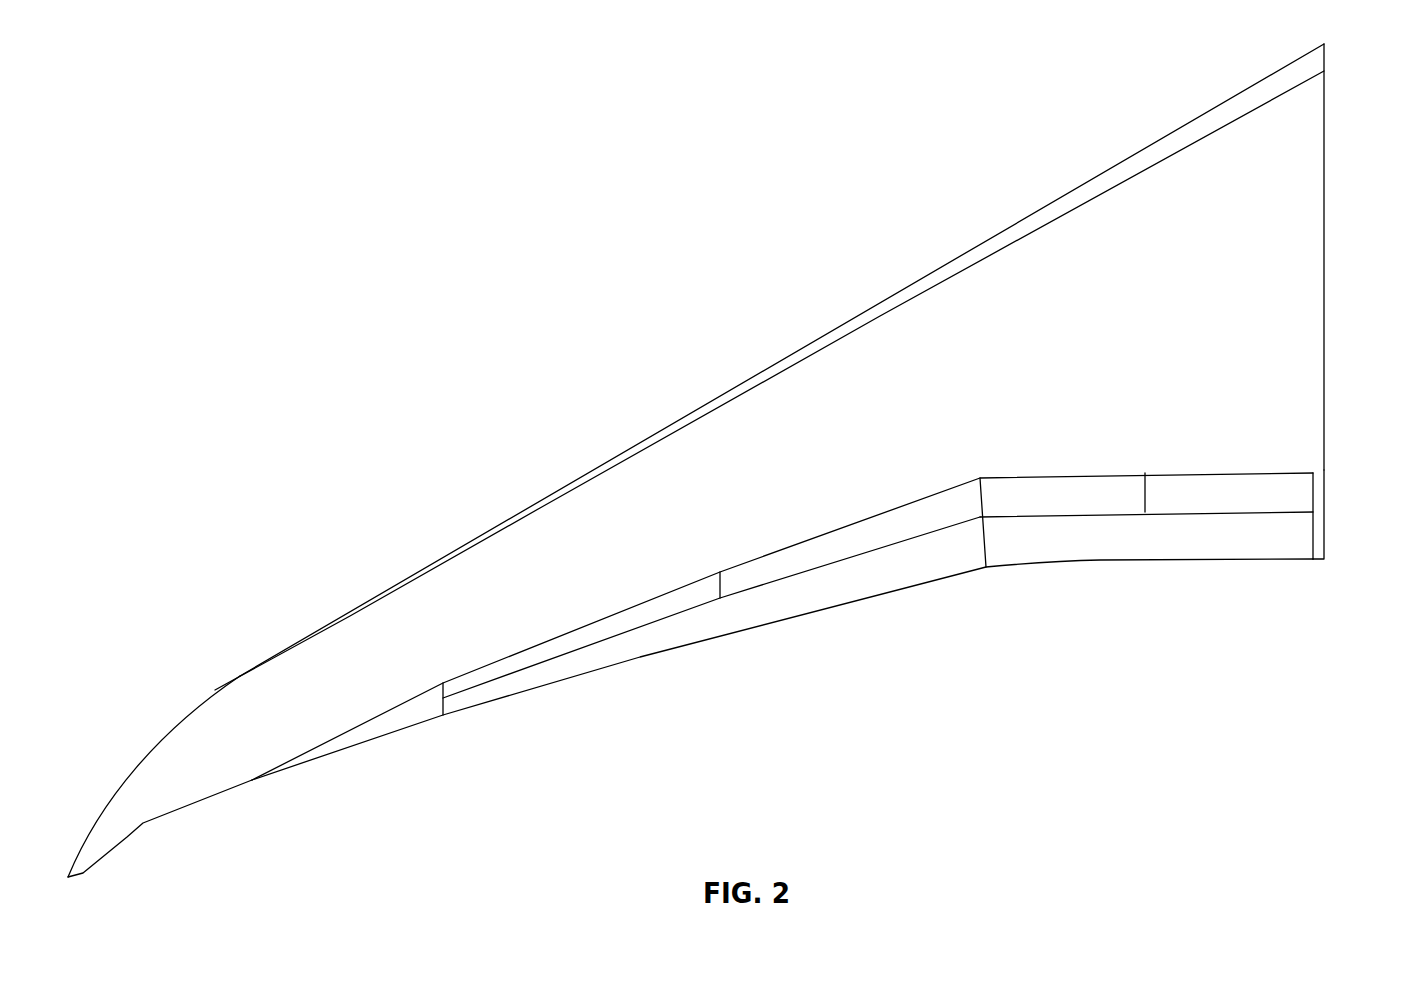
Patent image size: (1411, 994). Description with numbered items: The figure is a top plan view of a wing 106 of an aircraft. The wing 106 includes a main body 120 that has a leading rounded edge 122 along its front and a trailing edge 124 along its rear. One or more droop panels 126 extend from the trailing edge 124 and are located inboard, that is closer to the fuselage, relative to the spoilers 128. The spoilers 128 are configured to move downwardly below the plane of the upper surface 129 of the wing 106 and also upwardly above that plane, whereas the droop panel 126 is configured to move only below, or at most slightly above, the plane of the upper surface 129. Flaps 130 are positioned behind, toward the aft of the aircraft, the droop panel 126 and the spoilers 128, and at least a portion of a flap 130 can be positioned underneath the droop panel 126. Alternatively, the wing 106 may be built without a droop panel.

The wing 106 is at (250, 372).
The main body 120 is at (1300, 165).
The leading rounded edge 122 is at (1120, 162).
The trailing edge 124 is at (1325, 450).
The droop panel 126 is at (1270, 487).
The spoilers 128 is at (673, 597).
The upper surface 129 is at (970, 335).
The flaps 130 is at (830, 587).